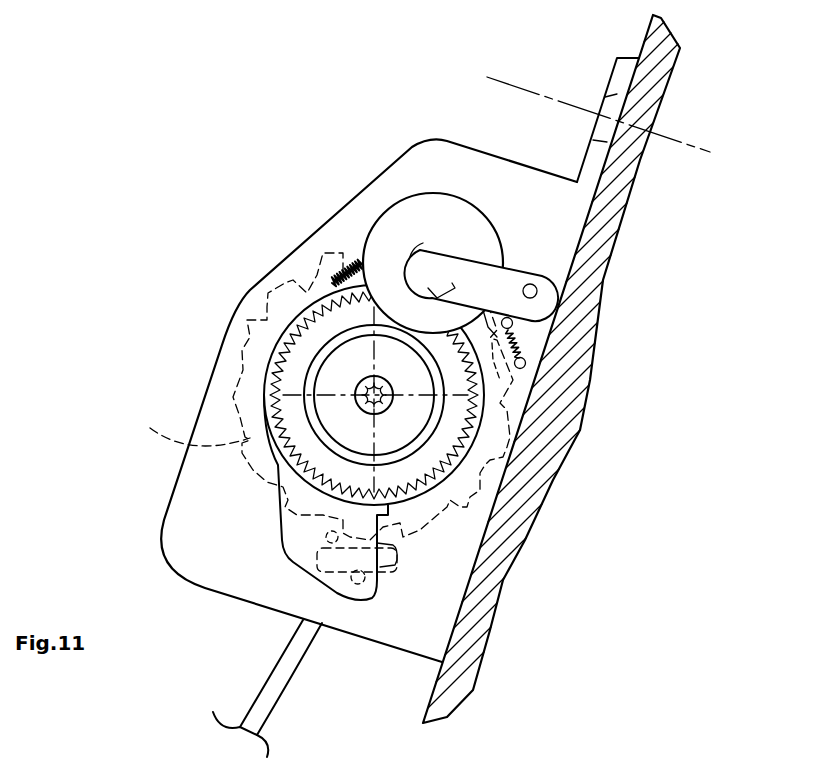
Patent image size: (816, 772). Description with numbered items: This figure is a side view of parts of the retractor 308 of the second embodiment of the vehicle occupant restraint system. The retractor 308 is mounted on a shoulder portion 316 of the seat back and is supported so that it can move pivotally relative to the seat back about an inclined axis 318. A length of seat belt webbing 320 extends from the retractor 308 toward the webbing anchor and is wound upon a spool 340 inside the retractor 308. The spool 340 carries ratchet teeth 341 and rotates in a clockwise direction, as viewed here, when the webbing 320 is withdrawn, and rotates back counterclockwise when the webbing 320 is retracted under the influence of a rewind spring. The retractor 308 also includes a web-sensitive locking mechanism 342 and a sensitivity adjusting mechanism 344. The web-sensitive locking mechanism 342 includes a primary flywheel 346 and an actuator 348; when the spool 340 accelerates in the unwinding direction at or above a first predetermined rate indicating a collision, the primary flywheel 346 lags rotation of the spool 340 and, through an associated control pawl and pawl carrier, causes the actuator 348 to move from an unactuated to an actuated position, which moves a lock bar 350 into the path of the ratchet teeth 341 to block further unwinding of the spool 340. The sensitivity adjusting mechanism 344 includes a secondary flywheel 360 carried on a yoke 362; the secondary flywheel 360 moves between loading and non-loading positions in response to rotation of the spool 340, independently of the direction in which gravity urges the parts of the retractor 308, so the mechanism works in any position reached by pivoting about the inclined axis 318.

The retractor 308 is at (289, 200).
The shoulder portion 316 is at (645, 43).
The inclined axis 318 is at (513, 85).
The seat belt webbing 320 is at (285, 667).
The spool 340 is at (256, 310).
The ratchet teeth 341 is at (186, 424).
The web-sensitive locking mechanism 342 is at (500, 388).
The sensitivity adjusting mechanism 344 is at (538, 231).
The primary flywheel 346 is at (450, 474).
The actuator 348 is at (377, 540).
The lock bar 350 is at (397, 567).
The secondary flywheel 360 is at (445, 193).
The yoke 362 is at (590, 270).